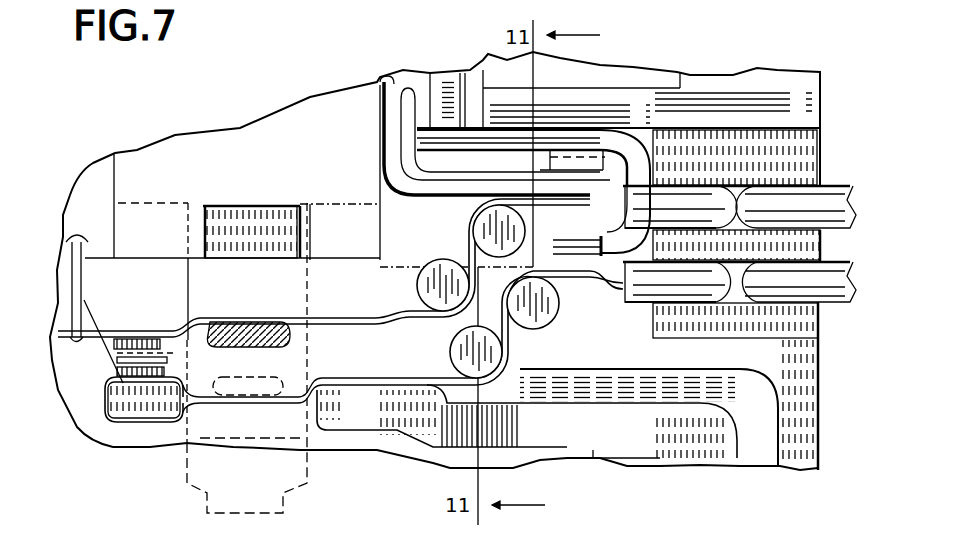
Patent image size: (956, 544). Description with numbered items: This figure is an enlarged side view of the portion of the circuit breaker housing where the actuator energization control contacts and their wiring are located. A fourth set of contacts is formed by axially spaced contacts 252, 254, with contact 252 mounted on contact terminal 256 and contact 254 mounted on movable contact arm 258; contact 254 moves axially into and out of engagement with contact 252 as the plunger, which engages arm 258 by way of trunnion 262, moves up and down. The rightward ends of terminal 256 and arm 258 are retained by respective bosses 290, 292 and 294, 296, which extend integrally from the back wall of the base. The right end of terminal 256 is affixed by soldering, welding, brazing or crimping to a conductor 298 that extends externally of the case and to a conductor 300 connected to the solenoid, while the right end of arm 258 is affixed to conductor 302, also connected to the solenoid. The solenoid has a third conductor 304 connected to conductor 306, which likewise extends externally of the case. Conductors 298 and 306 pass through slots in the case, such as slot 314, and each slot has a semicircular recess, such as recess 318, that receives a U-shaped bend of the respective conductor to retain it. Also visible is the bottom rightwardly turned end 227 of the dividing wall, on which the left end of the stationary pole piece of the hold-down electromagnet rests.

The bottom rightwardly turned end 227 is at (147, 410).
The contact 252 is at (115, 372).
The contact 254 is at (157, 318).
The contact terminal 256 is at (373, 371).
The movable contact arm 258 is at (315, 320).
The trunnion 262 is at (268, 327).
The boss 290 is at (490, 355).
The boss 292 is at (557, 304).
The boss 294 is at (418, 285).
The boss 296 is at (487, 225).
The conductor 298 is at (848, 303).
The conductor 300 is at (609, 237).
The conductor 302 is at (405, 160).
The third conductor 304 is at (413, 138).
The conductor 306 is at (845, 200).
The slot 314 is at (84, 240).
The recess 318 is at (103, 334).